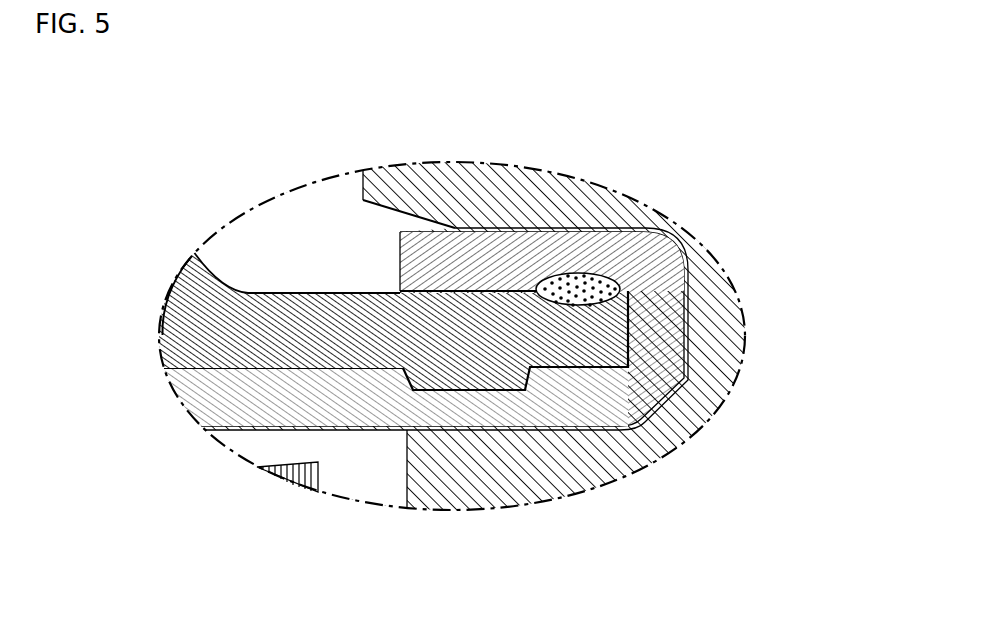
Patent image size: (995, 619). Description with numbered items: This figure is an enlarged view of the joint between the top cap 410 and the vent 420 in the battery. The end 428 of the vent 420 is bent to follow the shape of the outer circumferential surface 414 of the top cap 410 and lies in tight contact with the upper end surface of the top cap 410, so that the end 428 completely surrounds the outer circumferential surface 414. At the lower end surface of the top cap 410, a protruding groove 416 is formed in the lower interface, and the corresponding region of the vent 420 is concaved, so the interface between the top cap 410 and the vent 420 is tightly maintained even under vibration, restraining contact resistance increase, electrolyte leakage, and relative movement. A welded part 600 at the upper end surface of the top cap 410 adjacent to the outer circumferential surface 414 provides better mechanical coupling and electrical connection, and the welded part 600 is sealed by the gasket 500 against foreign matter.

The top cap 410 is at (193, 297).
The outer circumferential surface of the top cap 414 is at (632, 335).
The protruding groove 416 is at (490, 392).
The vent 420 is at (233, 407).
The end of the vent 428 is at (487, 262).
The gasket 500 is at (707, 403).
The welded part 600 is at (608, 275).